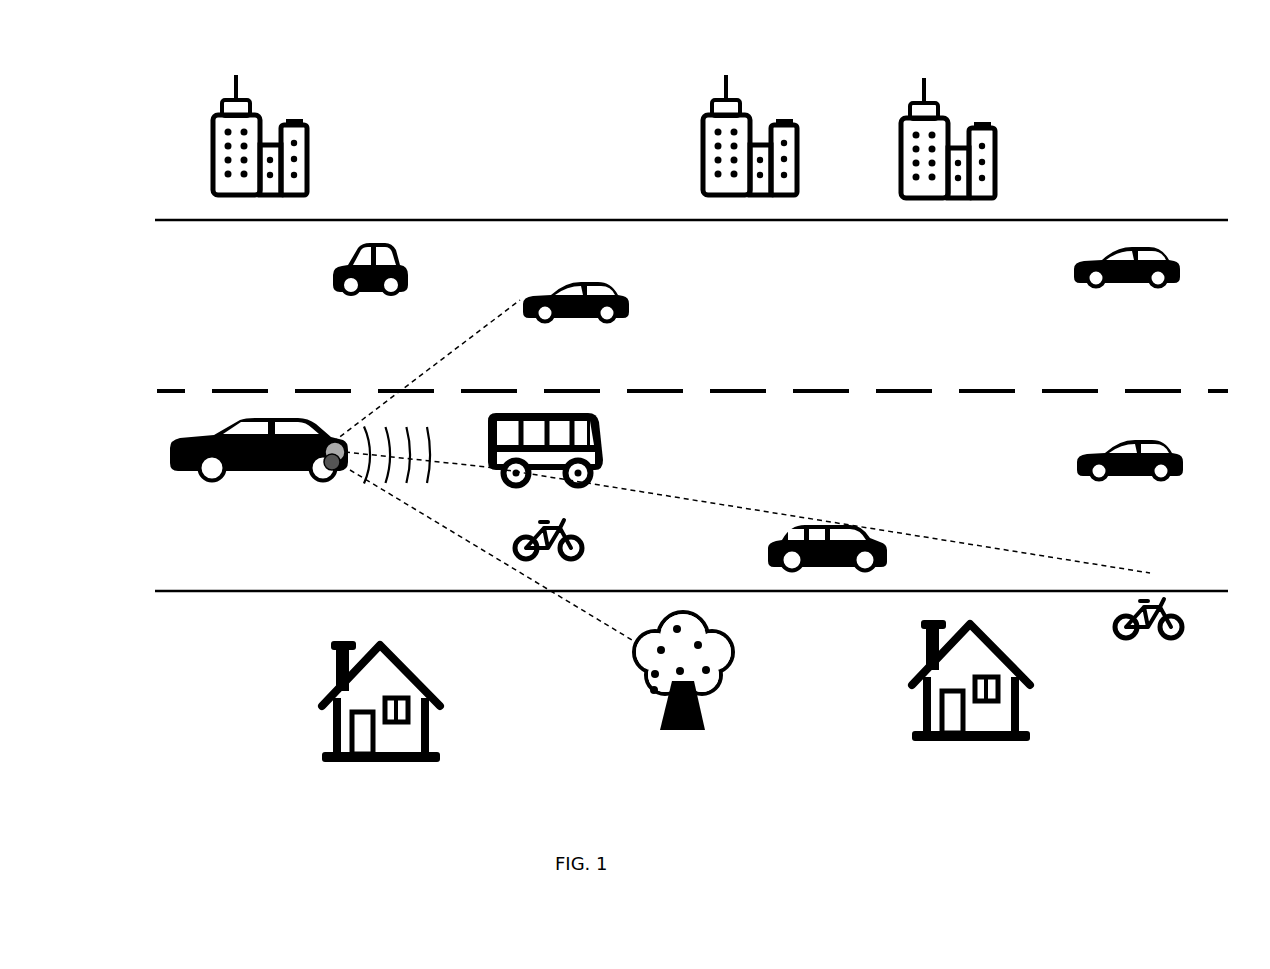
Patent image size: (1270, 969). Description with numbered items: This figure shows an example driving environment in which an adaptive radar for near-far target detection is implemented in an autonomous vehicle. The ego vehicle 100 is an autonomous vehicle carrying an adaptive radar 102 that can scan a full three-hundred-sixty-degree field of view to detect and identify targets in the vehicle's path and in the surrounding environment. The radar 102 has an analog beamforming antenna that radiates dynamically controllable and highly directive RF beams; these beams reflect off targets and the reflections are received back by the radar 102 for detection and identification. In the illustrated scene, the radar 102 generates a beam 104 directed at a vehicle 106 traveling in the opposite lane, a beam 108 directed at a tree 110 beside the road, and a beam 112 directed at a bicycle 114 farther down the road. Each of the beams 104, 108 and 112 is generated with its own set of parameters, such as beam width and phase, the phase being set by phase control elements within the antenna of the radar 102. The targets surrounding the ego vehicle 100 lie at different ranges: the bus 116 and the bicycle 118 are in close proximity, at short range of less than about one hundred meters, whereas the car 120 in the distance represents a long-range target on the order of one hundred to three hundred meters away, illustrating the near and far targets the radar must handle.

The ego vehicle 100 is at (170, 438).
The adaptive radar 102 is at (348, 478).
The beam 104 is at (417, 378).
The vehicle 106 is at (568, 290).
The beam 108 is at (548, 592).
The tree 110 is at (730, 648).
The beam 112 is at (948, 538).
The bicycle 114 is at (1157, 596).
The bus 116 is at (604, 441).
The bicycle 118 is at (577, 540).
The car 120 is at (1118, 440).